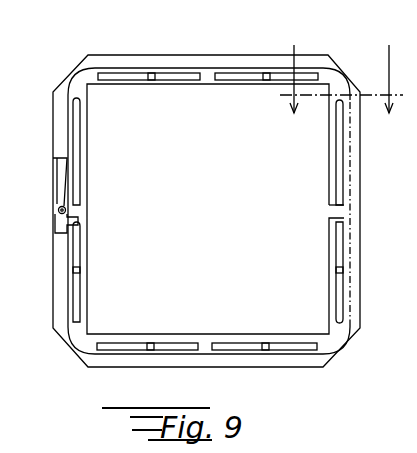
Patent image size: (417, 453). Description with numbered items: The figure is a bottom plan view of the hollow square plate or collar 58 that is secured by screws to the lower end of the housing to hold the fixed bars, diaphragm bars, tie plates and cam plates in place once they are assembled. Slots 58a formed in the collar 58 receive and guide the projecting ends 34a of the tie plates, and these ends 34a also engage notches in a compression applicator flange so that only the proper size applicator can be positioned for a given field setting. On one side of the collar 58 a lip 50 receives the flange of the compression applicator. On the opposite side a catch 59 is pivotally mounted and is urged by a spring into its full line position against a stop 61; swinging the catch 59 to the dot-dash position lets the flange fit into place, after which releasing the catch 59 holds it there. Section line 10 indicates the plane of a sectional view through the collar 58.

The section line 10 is at (341, 93).
The ends of tie plates 34a is at (151, 343).
The lip 50 is at (340, 243).
The hollow square plate 58 is at (198, 56).
The slots 58a is at (338, 302).
The catch 59 is at (72, 223).
The stop 61 is at (55, 157).